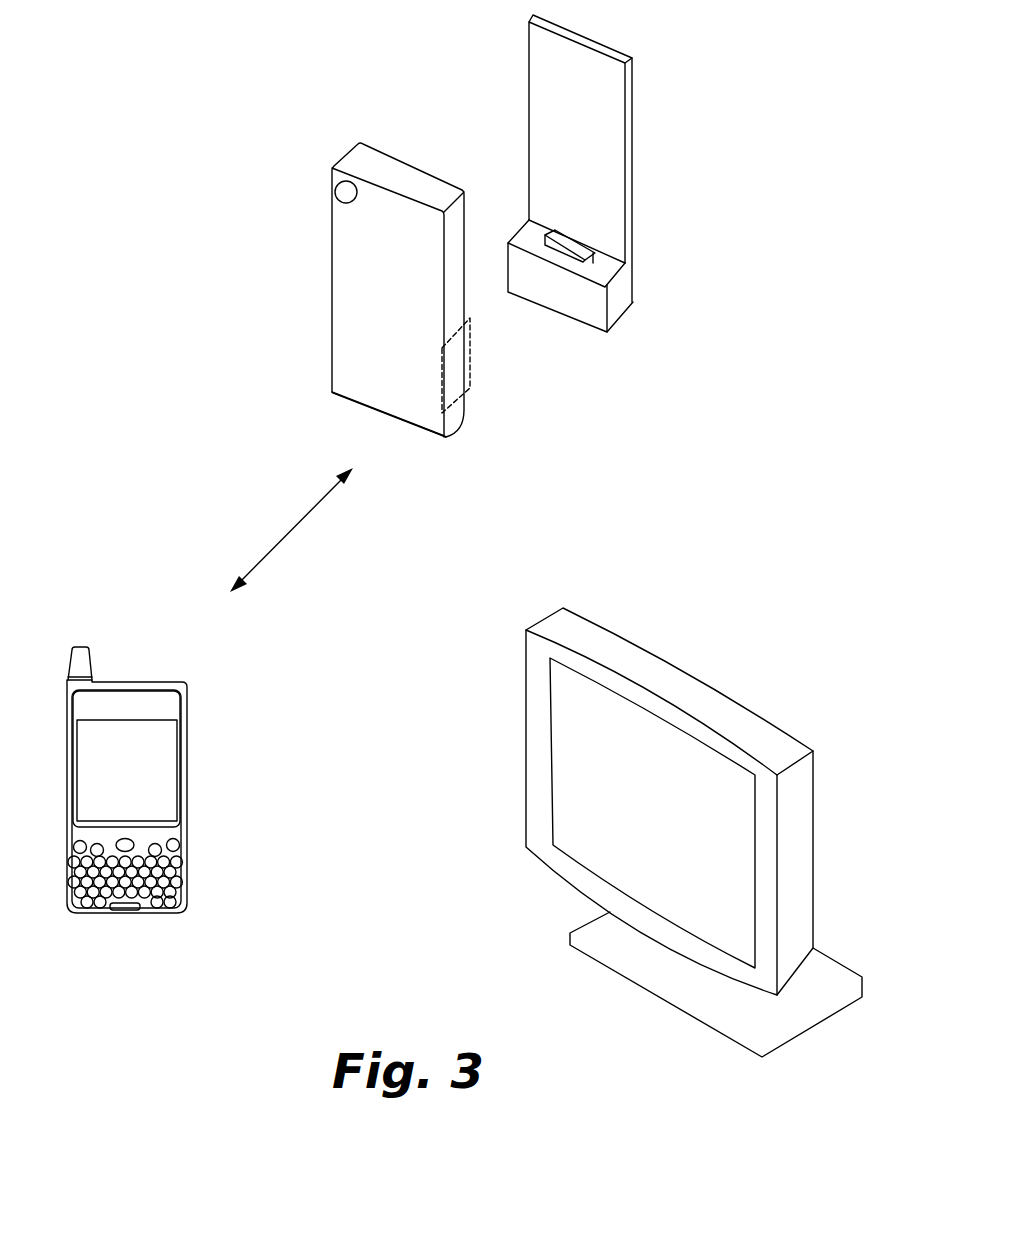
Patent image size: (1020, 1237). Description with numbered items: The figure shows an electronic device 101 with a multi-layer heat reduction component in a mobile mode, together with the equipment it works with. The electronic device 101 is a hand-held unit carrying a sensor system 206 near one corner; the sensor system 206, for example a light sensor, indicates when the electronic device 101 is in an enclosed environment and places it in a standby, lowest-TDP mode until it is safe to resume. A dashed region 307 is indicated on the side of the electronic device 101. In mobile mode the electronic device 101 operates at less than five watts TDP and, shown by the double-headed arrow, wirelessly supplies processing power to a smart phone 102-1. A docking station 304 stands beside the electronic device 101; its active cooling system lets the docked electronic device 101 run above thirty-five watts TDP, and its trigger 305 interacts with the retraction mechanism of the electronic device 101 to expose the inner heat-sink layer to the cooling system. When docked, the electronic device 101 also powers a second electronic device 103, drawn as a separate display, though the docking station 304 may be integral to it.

The electronic device 101 is at (314, 130).
The sensor system 206 is at (335, 188).
The connector 307 is at (470, 351).
The docking station 304 is at (633, 273).
The trigger 305 is at (585, 261).
The smart phone 102-1 is at (110, 911).
The second electronic device 103 is at (730, 692).